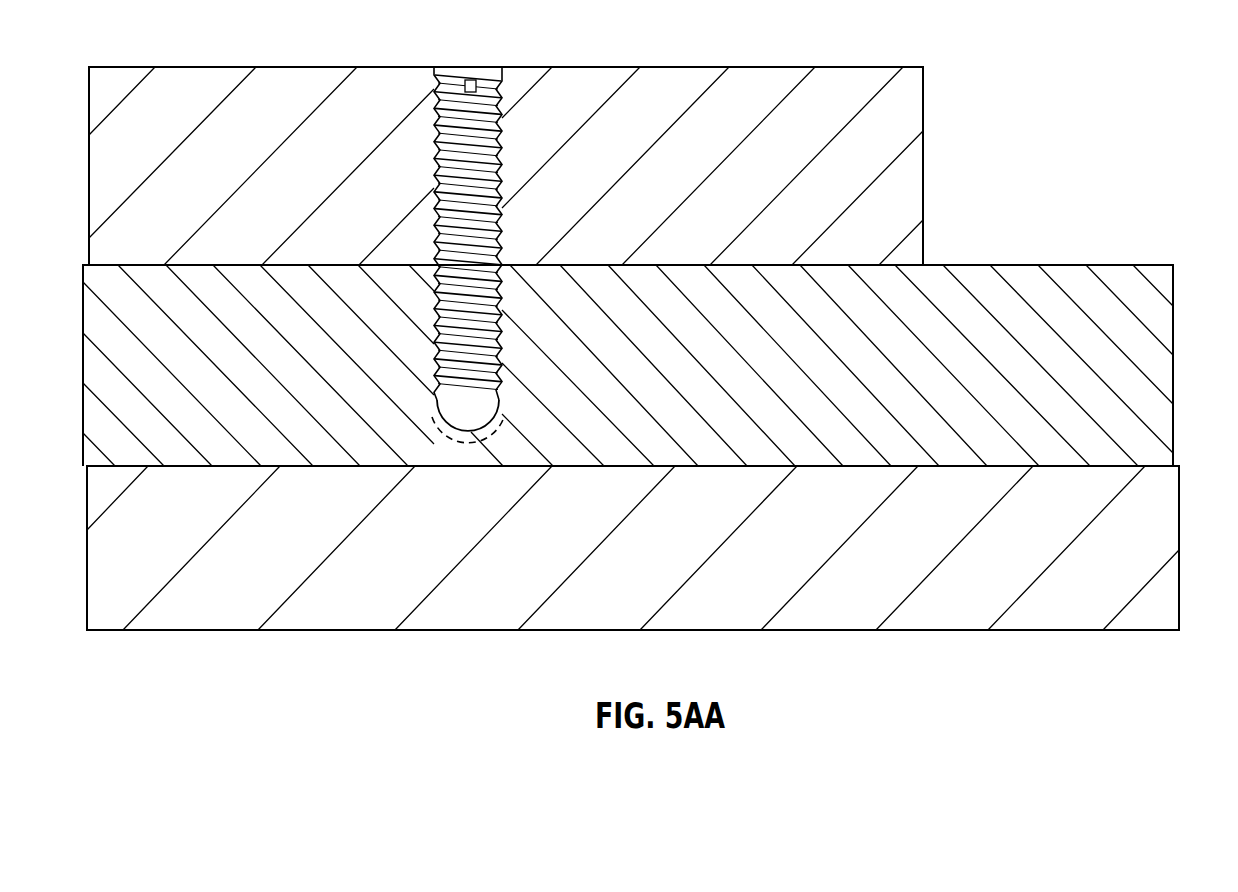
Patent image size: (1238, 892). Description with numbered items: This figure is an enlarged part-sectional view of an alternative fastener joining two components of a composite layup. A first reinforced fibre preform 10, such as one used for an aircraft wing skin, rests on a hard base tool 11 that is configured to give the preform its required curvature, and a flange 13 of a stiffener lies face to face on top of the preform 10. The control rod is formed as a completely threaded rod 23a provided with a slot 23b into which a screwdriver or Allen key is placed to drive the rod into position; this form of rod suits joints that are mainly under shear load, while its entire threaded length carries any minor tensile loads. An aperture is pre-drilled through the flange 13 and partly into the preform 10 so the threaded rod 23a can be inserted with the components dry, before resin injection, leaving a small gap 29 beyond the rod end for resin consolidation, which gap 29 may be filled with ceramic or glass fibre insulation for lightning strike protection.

The flange 13 is at (917, 127).
The first reinforced fibre preform 10 is at (1163, 332).
The hard base tool 11 is at (1152, 542).
The completely threaded rod 23a is at (469, 78).
The slot 23b is at (504, 100).
The gap 29 is at (460, 435).